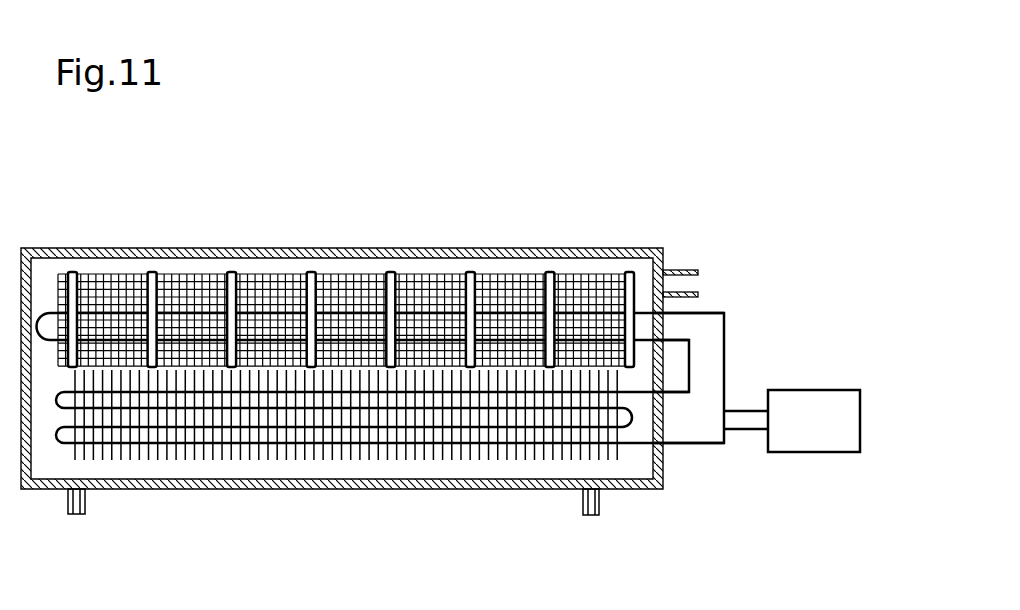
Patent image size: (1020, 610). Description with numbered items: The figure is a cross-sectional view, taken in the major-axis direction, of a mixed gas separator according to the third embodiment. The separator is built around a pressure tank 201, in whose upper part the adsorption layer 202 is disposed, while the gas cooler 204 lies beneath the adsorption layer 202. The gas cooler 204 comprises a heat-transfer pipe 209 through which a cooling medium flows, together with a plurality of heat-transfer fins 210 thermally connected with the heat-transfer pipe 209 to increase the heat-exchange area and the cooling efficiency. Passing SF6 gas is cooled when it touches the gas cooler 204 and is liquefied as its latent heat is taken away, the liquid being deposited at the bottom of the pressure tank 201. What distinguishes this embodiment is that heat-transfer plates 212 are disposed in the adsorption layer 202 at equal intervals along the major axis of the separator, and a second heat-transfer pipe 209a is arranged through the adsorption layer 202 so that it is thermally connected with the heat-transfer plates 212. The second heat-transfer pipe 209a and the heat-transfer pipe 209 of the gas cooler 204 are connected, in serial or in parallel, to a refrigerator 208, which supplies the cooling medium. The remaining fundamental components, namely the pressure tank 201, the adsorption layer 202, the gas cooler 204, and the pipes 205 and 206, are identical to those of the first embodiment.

The pressure tank 201 is at (273, 248).
The adsorption layer 202 is at (412, 276).
The heat-transfer plates 212 is at (152, 275).
The gas cooler 204 is at (426, 462).
The heat-transfer fins 210 is at (222, 462).
The pipe 206 is at (87, 510).
The pipe 205 is at (675, 271).
The heat-transfer pipe 209 is at (690, 447).
The second heat-transfer pipe 209a is at (690, 340).
The refrigerator 208 is at (827, 390).